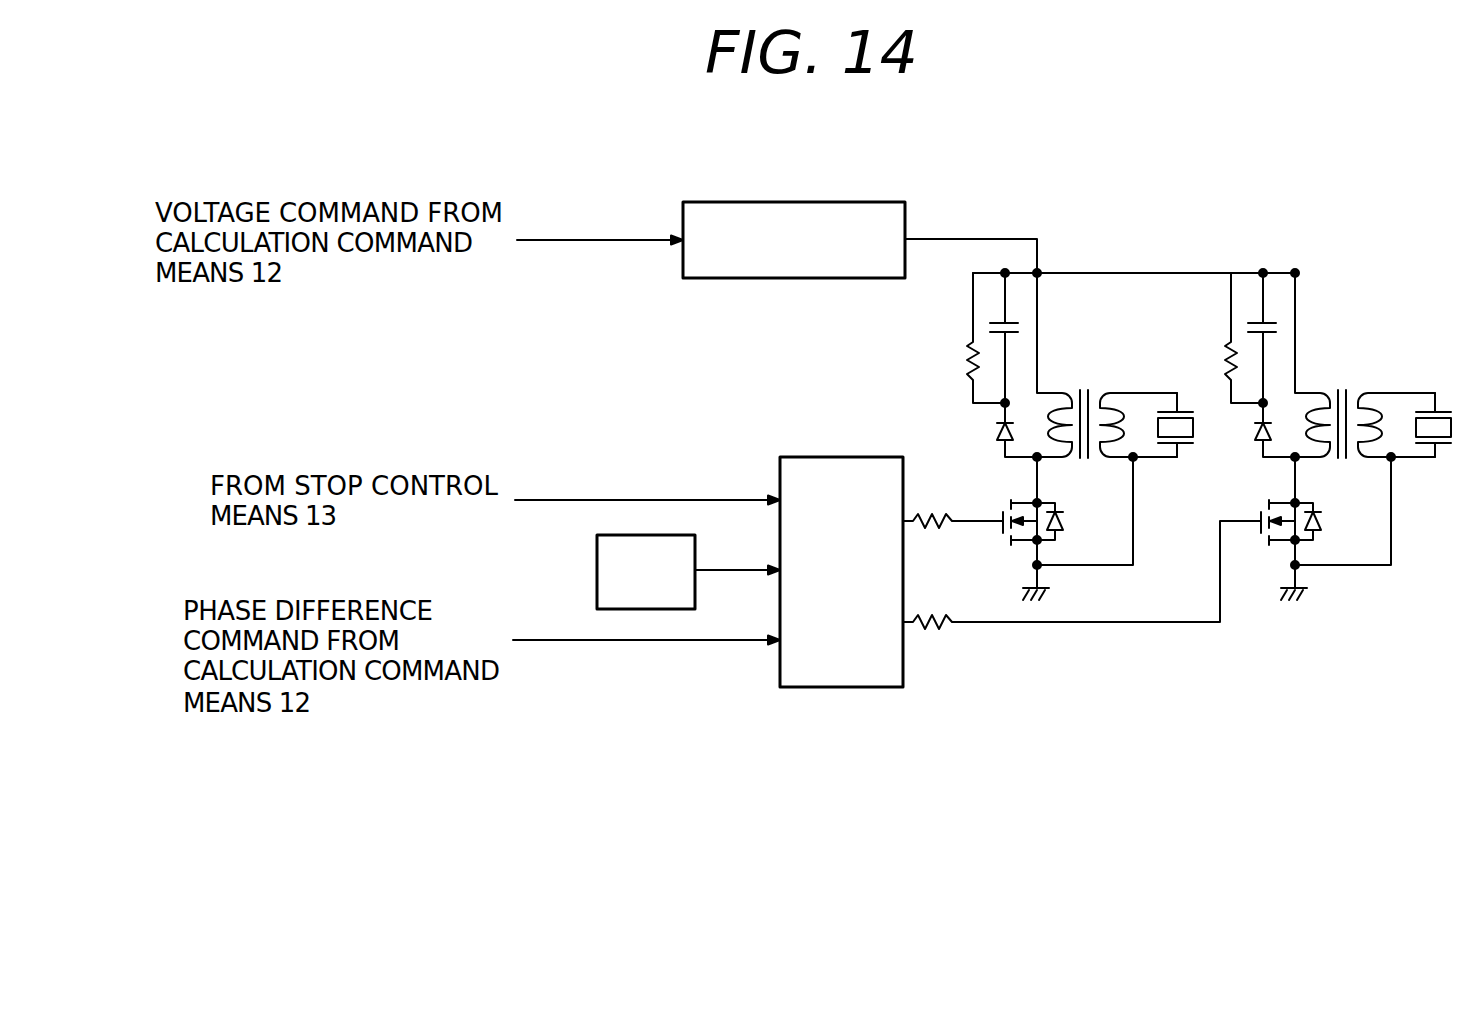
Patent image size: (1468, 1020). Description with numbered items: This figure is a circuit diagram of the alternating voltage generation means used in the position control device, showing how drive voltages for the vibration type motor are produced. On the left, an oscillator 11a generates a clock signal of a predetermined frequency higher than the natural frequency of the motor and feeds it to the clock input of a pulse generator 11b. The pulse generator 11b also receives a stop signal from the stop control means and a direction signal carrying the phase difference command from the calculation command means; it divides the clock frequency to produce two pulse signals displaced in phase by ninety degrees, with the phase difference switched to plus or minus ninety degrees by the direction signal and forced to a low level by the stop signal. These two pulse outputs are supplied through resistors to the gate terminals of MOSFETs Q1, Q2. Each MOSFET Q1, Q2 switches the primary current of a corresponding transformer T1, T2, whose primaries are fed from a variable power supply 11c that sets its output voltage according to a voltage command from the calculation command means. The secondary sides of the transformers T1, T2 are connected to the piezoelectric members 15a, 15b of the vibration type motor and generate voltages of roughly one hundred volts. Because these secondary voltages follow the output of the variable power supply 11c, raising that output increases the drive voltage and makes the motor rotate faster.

The oscillator 11a is at (597, 557).
The pulse generator 11b is at (860, 456).
The variable power supply 11c is at (865, 202).
The transformer T1 is at (1085, 388).
The transformer T2 is at (1365, 365).
The piezoelectric member 15a is at (1188, 410).
The piezoelectric member 15b is at (1440, 408).
The MOSFET Q1 is at (1002, 511).
The MOSFET Q2 is at (1306, 528).